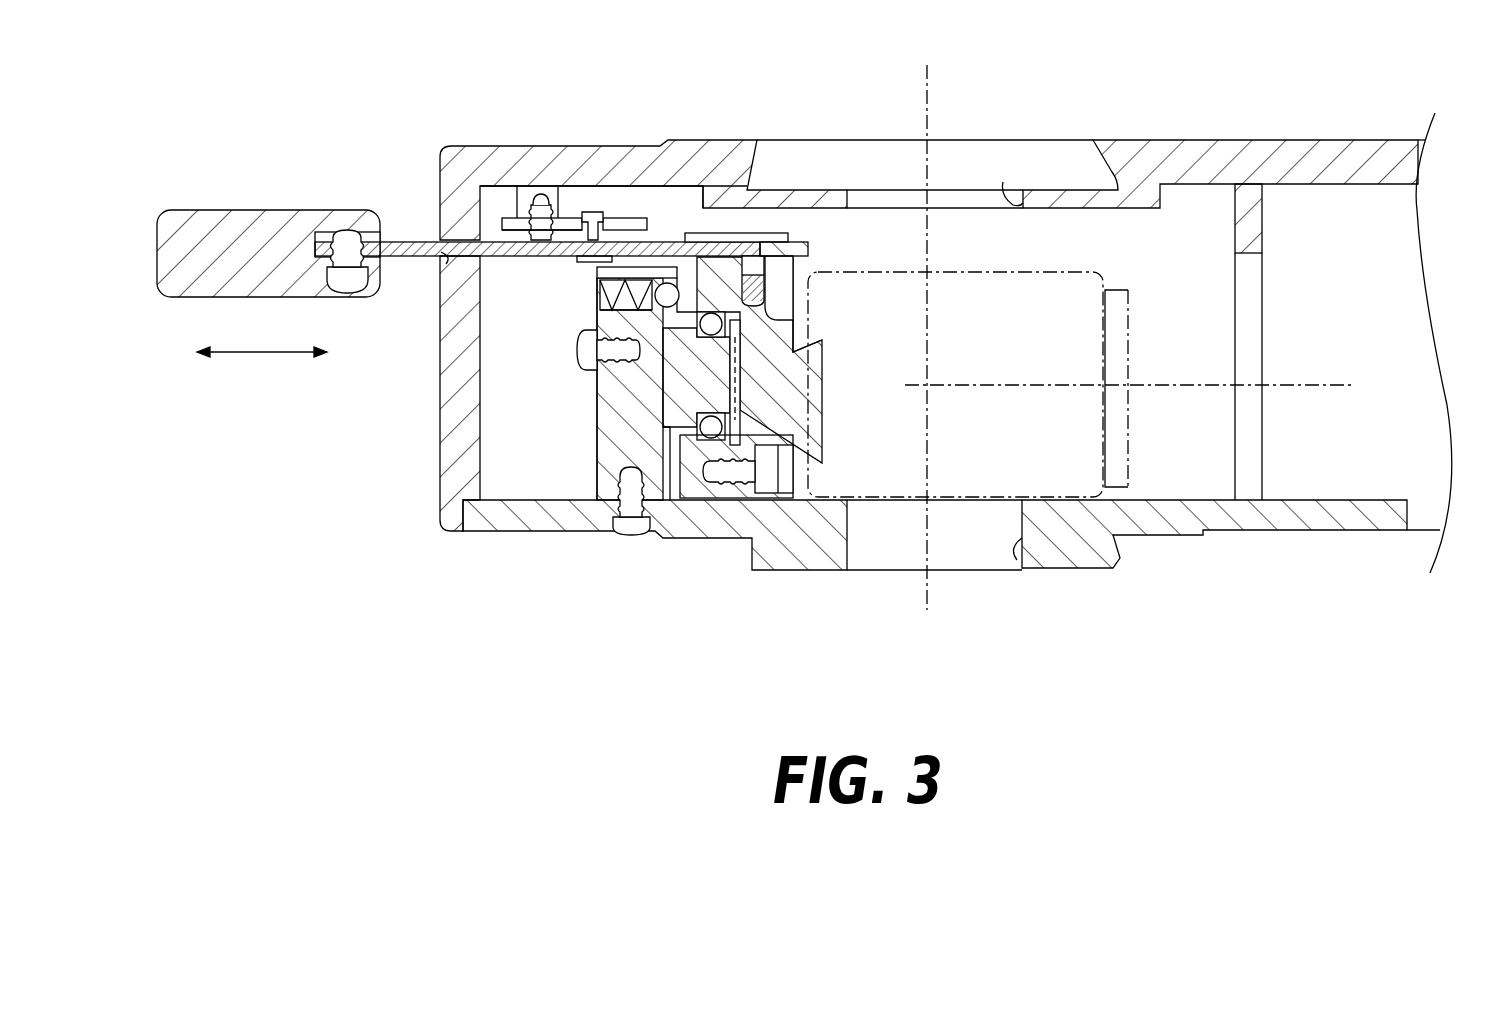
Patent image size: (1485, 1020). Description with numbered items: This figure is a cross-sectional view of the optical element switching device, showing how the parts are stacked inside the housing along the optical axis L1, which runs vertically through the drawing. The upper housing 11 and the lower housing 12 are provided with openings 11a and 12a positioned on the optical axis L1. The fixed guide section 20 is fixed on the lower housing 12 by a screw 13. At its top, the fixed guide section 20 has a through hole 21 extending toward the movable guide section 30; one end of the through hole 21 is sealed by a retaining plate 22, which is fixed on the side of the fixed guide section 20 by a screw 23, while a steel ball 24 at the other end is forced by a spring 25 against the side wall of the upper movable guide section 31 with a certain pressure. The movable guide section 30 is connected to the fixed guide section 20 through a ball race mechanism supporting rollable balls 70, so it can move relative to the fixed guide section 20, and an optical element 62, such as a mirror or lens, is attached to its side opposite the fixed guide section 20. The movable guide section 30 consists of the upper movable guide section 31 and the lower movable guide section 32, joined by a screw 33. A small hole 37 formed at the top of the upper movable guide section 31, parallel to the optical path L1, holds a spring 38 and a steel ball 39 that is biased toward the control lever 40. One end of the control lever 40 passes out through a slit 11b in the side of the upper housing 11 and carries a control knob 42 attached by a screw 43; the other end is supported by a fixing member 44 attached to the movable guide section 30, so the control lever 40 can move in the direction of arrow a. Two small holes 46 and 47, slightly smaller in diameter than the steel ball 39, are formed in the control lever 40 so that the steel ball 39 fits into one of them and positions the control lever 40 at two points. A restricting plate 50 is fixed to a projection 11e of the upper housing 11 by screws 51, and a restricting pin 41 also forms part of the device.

The upper housing 11 is at (1340, 153).
The opening 11a is at (1003, 182).
The slit 11b is at (423, 258).
The projection 11e is at (510, 195).
The lower housing 12 is at (1268, 517).
The opening 12a is at (1017, 540).
The screw 13 is at (613, 530).
The fixed guide section 20 is at (600, 457).
The through hole 21 is at (610, 285).
The retaining plate 22 is at (592, 374).
The screw 23 is at (577, 351).
The steel ball 24 is at (667, 293).
The spring 25 is at (597, 297).
The movable guide section 30 is at (805, 428).
The upper movable guide section 31 is at (822, 372).
The lower movable guide section 32 is at (707, 485).
The screw 33 is at (770, 480).
The small hole 37 is at (758, 310).
The spring 38 is at (753, 303).
The steel ball 39 is at (758, 263).
The control lever 40 is at (385, 243).
The restricting pin 41 is at (606, 214).
The control knob 42 is at (228, 221).
The screw 43 is at (357, 294).
The fixing member 44 is at (805, 240).
The small hole 46 is at (712, 204).
The small hole 47 is at (760, 240).
The restricting plate 50 is at (653, 214).
The screws 51 is at (507, 240).
The optical element 62 is at (1130, 352).
The balls 70 is at (705, 315).
The arrow a is at (252, 353).
The optical axis L1 is at (927, 67).